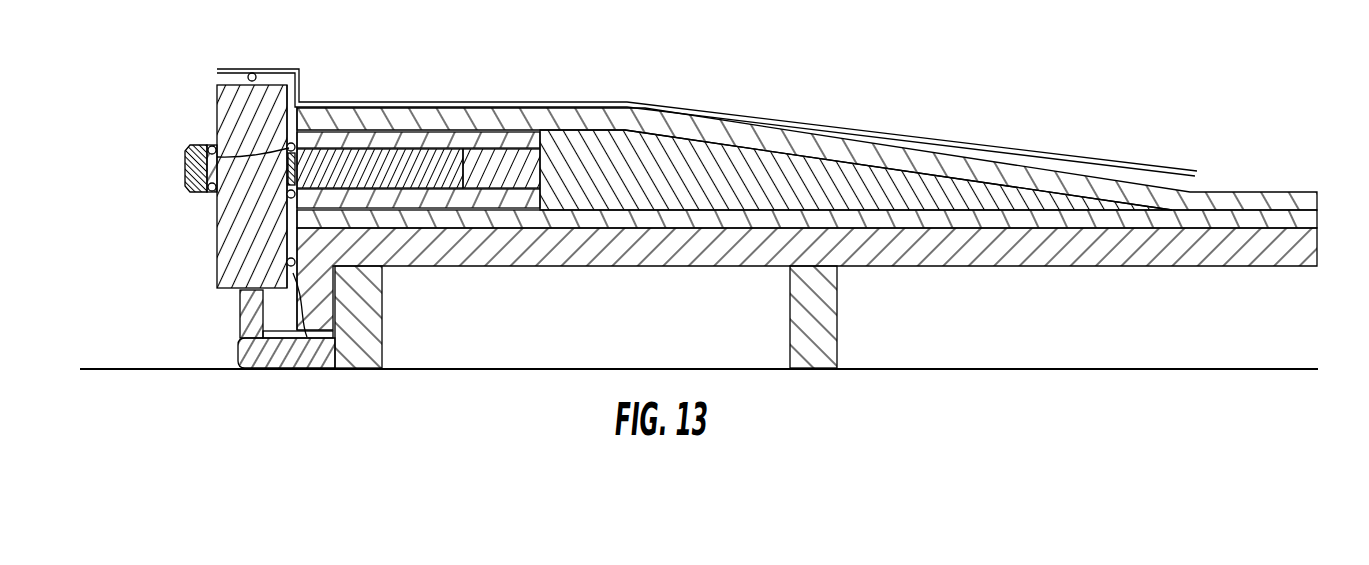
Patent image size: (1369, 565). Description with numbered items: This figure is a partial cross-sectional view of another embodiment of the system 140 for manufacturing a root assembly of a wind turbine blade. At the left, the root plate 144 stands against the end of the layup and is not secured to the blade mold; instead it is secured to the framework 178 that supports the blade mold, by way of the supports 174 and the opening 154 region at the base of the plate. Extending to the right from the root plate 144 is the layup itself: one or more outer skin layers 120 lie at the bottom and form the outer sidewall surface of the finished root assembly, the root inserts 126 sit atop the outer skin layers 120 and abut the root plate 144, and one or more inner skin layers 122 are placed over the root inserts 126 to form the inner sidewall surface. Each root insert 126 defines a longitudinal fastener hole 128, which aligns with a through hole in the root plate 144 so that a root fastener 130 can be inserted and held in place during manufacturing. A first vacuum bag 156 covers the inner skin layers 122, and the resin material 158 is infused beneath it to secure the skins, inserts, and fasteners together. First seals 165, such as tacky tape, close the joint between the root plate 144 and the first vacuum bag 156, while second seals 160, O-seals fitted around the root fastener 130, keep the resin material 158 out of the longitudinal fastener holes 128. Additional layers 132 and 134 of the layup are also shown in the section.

The outer skin layer 120 is at (955, 222).
The inner skin layer 122 is at (920, 163).
The root insert 126 is at (499, 145).
The longitudinal fastener hole 128 is at (423, 190).
The root fastener 130 is at (363, 172).
The upper insulating layer 132 is at (306, 141).
The wedge layer 134 is at (947, 183).
The system 140 is at (108, 86).
The root plate 144 is at (226, 114).
The opening 154 is at (270, 340).
The first vacuum bag 156 is at (895, 132).
The resin material 158 is at (1230, 185).
The second seal 160 is at (209, 146).
The first seal 165 is at (256, 76).
The support 174 is at (297, 366).
The framework 178 is at (348, 360).